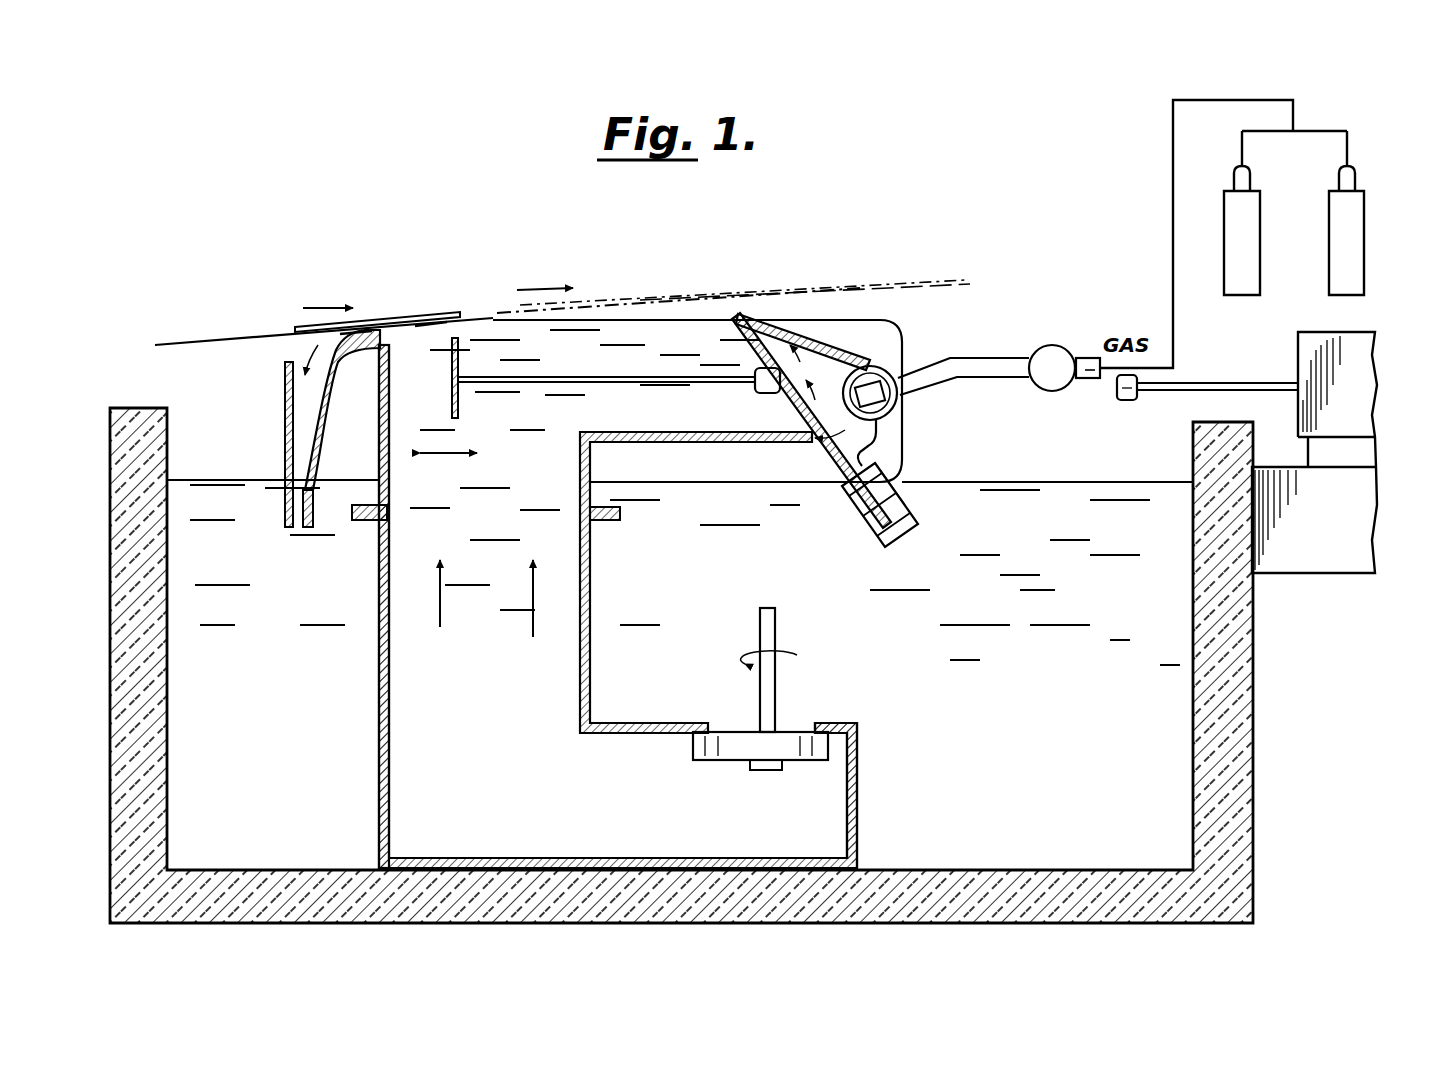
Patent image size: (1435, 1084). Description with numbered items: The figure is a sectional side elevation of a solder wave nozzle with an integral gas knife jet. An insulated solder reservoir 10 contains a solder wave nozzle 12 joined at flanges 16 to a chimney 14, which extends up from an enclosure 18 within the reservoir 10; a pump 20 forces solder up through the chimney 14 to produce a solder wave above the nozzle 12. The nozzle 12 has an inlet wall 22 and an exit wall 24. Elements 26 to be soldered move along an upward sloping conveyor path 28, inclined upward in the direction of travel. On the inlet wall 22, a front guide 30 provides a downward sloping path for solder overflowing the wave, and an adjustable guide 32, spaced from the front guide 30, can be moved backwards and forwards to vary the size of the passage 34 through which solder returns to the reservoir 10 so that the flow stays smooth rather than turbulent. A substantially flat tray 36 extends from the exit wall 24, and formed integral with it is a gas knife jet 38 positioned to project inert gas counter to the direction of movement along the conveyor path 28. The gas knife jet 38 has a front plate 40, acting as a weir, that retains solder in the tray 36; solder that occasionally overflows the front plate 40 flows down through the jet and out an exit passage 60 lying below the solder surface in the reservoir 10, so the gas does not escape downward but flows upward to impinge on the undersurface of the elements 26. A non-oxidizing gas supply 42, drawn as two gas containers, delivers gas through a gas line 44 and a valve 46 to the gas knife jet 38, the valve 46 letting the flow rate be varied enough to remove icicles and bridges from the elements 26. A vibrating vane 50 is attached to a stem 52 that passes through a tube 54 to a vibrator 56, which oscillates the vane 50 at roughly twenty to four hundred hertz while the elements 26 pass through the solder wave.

The solder reservoir 10 is at (1240, 686).
The solder wave nozzle 12 is at (364, 379).
The chimney 14 is at (379, 628).
The flanges 16 is at (610, 522).
The enclosure 18 is at (857, 780).
The pump 20 is at (725, 752).
The inlet wall 22 is at (380, 445).
The exit wall 24 is at (590, 455).
The elements to be soldered 26 is at (448, 312).
The conveyor path 28 is at (233, 340).
The front guide 30 is at (330, 393).
The adjustable guide 32 is at (285, 405).
The passage 34 is at (302, 465).
The flat tray 36 is at (700, 440).
The gas knife jet 38 is at (880, 411).
The front plate 40 is at (835, 450).
The non-oxidizing gas supply 42 is at (1247, 238).
The gas line 44 is at (1172, 197).
The valve 46 is at (1052, 345).
The vibrating vane 50 is at (462, 400).
The stem 52 is at (1205, 395).
The tube 54 is at (770, 398).
The vibrator 56 is at (1297, 348).
The exit passage 60 is at (920, 525).